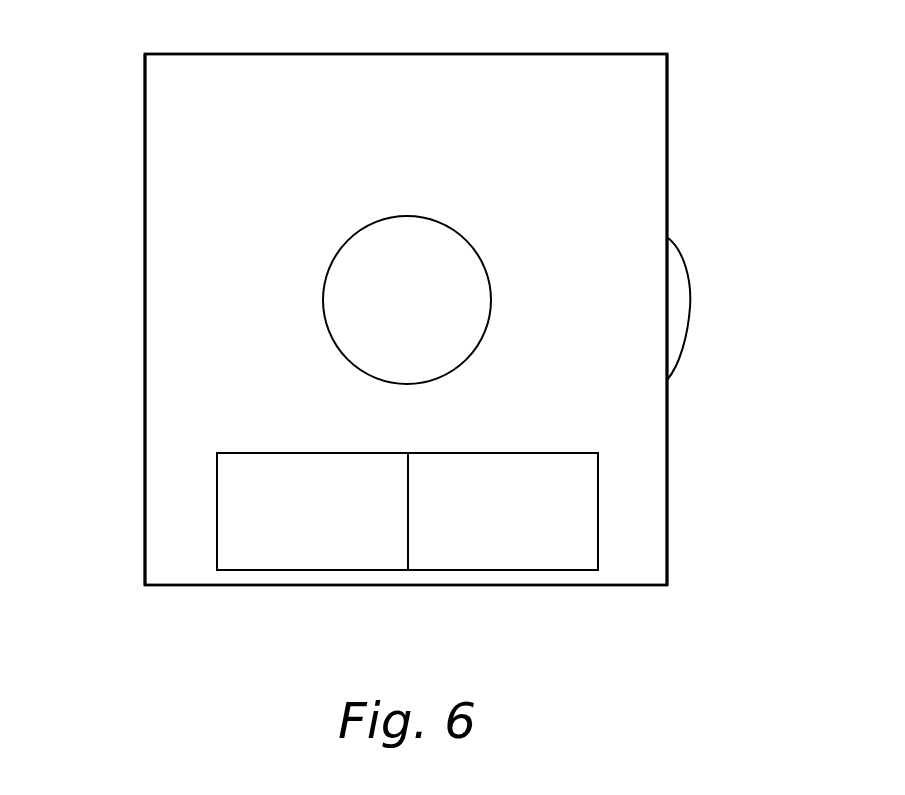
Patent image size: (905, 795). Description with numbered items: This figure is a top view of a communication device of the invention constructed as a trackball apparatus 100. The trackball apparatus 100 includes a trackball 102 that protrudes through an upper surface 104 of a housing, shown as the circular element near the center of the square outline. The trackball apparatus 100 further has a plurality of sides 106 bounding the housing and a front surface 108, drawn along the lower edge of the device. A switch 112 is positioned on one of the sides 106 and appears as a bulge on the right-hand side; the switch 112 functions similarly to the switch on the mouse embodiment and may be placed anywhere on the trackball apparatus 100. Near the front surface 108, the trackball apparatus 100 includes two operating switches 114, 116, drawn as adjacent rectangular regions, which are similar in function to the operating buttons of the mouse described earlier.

The trackball apparatus 100 is at (660, 67).
The trackball 102 is at (435, 232).
The upper surface 104 is at (648, 153).
The sides 106 is at (145, 292).
The front surface 108 is at (420, 587).
The switch 112 is at (683, 325).
The operating switch 114 is at (290, 546).
The operating switch 116 is at (553, 543).